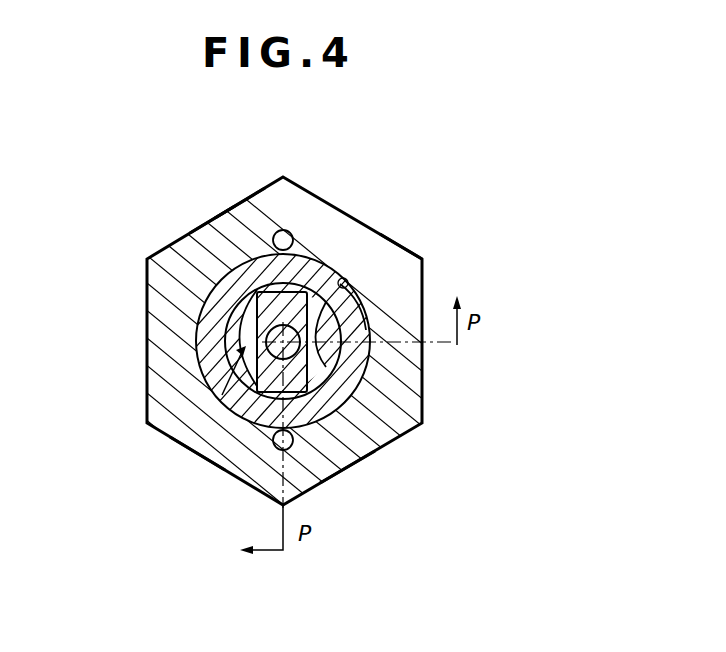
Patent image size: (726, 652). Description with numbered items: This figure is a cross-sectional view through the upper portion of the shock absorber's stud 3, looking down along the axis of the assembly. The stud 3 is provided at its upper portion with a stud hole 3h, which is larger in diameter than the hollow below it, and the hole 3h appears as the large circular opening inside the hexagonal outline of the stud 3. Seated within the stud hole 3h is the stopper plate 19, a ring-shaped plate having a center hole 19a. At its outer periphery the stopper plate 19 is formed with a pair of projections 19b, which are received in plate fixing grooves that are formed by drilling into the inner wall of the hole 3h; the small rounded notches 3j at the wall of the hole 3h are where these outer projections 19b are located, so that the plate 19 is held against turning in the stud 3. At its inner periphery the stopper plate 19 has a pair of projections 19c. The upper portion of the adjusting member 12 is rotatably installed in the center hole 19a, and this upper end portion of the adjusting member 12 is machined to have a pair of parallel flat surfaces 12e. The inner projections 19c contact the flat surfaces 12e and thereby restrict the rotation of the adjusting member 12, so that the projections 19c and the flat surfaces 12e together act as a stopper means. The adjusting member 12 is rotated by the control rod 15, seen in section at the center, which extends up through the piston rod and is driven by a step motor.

The stud 3 is at (140, 320).
The stud hole 3h is at (362, 279).
The notch 3j is at (294, 238).
The adjusting member 12 is at (336, 274).
The flat surfaces 12e is at (240, 291).
The control rod 15 is at (257, 339).
The stopper plate 19 is at (216, 382).
The center hole 19a is at (215, 238).
The projections 19b is at (240, 204).
The projections 19c is at (196, 453).